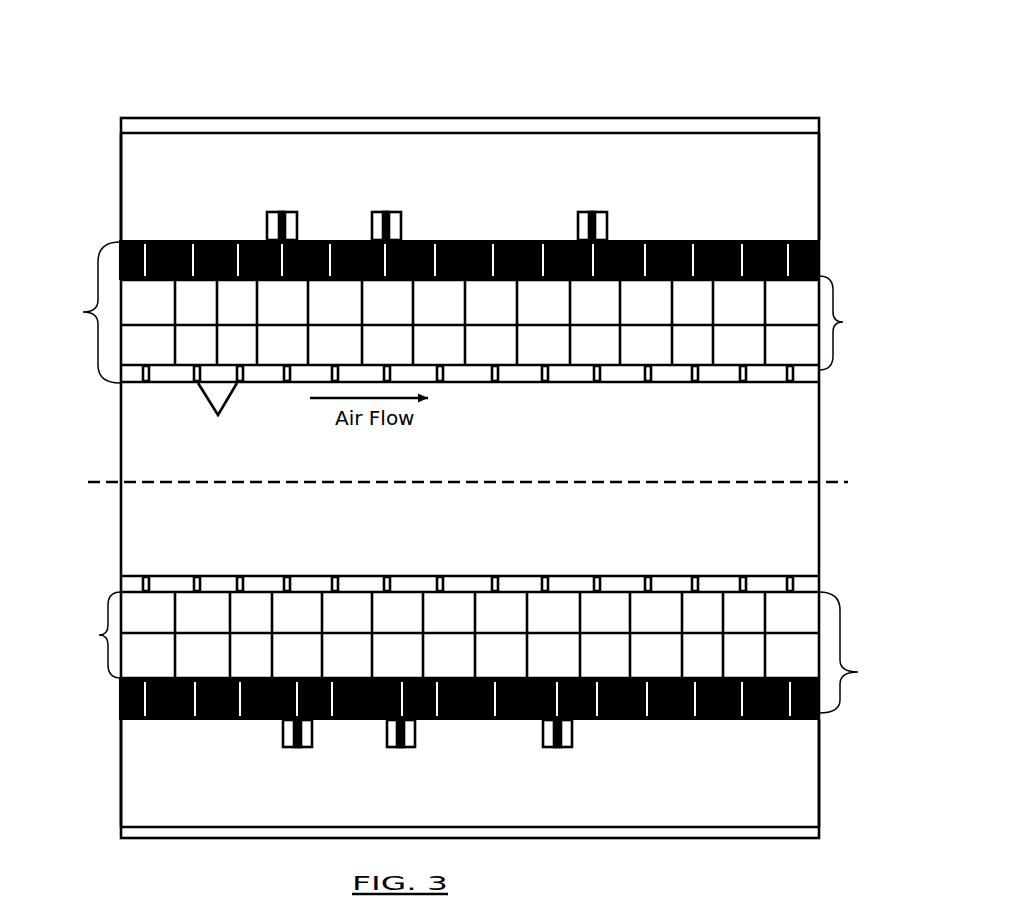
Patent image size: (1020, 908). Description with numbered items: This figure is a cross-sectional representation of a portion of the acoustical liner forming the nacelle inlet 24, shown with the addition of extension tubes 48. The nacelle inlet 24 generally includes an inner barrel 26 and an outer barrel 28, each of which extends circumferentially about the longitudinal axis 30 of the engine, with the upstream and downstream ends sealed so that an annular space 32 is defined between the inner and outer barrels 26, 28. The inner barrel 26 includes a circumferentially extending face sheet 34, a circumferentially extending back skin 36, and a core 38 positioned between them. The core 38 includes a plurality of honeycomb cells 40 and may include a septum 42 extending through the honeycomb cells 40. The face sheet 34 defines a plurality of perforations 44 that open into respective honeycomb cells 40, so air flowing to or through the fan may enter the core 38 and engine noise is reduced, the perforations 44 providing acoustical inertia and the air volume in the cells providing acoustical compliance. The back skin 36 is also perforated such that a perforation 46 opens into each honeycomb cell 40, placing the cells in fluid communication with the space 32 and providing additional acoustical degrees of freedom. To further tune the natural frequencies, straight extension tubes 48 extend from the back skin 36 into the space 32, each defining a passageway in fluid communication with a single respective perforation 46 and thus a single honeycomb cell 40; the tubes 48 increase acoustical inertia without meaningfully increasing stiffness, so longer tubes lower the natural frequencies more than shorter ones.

The nacelle inlet 24 is at (541, 82).
The inner barrel 26 is at (473, 477).
The outer barrel 28 is at (308, 117).
The longitudinal axis 30 is at (838, 490).
The annular space 32 is at (785, 185).
The face sheet 34 is at (175, 365).
The back skin 36 is at (422, 238).
The core 38 is at (473, 477).
The honeycomb cells 40 is at (793, 353).
The septum 42 is at (793, 320).
The perforations 44 is at (218, 418).
The perforation 46 is at (492, 238).
The extension tubes 48 is at (292, 212).